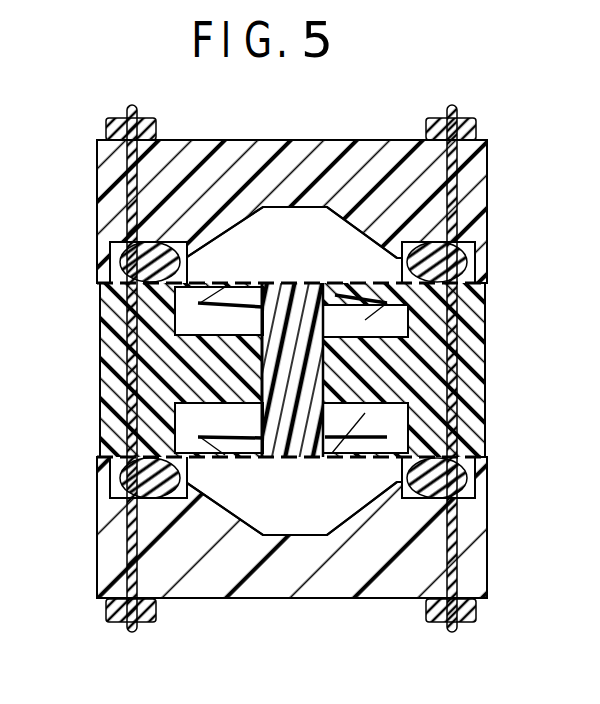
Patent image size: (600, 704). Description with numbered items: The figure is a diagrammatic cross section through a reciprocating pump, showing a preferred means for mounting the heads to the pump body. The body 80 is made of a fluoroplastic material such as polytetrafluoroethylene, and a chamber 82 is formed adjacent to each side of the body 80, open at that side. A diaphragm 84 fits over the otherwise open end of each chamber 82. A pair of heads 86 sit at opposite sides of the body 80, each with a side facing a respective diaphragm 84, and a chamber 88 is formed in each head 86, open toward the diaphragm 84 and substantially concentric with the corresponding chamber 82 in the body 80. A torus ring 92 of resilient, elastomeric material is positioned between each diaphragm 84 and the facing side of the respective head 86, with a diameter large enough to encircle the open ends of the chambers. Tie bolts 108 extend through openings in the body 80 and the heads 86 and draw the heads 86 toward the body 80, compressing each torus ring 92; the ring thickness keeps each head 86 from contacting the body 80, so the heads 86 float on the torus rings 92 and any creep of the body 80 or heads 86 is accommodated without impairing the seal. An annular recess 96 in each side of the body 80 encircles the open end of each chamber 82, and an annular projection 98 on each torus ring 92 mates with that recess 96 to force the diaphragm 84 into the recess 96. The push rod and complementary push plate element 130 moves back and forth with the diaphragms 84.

The body 80 is at (97, 313).
The chamber 82 is at (350, 282).
The diaphragm 84 is at (370, 282).
The head 86 is at (302, 210).
The chamber 88 is at (330, 185).
The torus ring 92 is at (190, 250).
The annular recess 96 is at (198, 303).
The annular projection 98 is at (187, 263).
The tie bolt 108 is at (148, 172).
The push rod and push plate element 130 is at (300, 381).